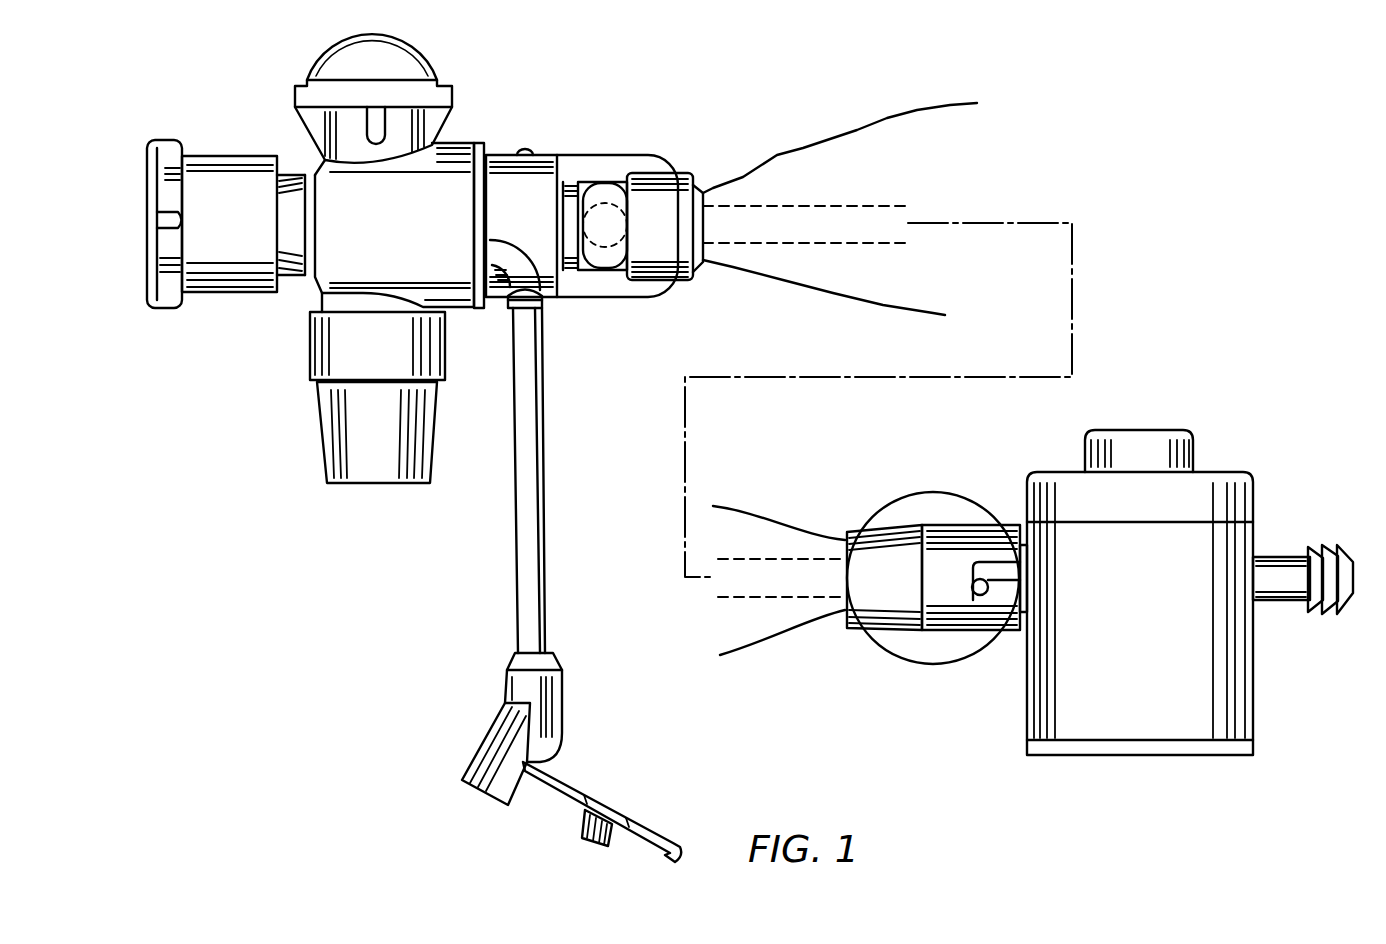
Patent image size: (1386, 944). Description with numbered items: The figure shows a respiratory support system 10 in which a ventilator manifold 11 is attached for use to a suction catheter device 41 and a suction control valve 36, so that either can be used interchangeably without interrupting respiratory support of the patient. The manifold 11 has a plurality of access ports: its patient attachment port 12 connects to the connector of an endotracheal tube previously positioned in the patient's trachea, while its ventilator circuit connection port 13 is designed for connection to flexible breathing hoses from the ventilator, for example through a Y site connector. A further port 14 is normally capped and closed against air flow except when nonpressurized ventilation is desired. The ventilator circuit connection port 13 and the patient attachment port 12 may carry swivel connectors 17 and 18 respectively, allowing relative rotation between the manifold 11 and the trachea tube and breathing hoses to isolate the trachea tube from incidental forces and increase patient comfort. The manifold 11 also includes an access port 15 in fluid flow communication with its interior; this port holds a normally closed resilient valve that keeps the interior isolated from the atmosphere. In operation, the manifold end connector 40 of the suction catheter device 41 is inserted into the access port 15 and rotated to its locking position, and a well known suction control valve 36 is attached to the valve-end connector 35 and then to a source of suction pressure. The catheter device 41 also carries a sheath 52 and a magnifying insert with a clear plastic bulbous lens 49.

The respiratory support system 10 is at (485, 525).
The ventilator manifold 11 is at (290, 324).
The patient attachment port 12 is at (220, 306).
The ventilator circuit connection port 13 is at (300, 436).
The port 14 is at (265, 92).
The access port 15 is at (489, 145).
The swivel connector 17 is at (392, 449).
The swivel connector 18 is at (167, 272).
The valve-end connector 35 is at (933, 470).
The suction control valve 36 is at (1005, 702).
The manifold end connector 40 is at (680, 148).
The suction catheter device 41 is at (920, 96).
The bulbous lens 49 is at (598, 190).
The sheath 52 is at (827, 140).